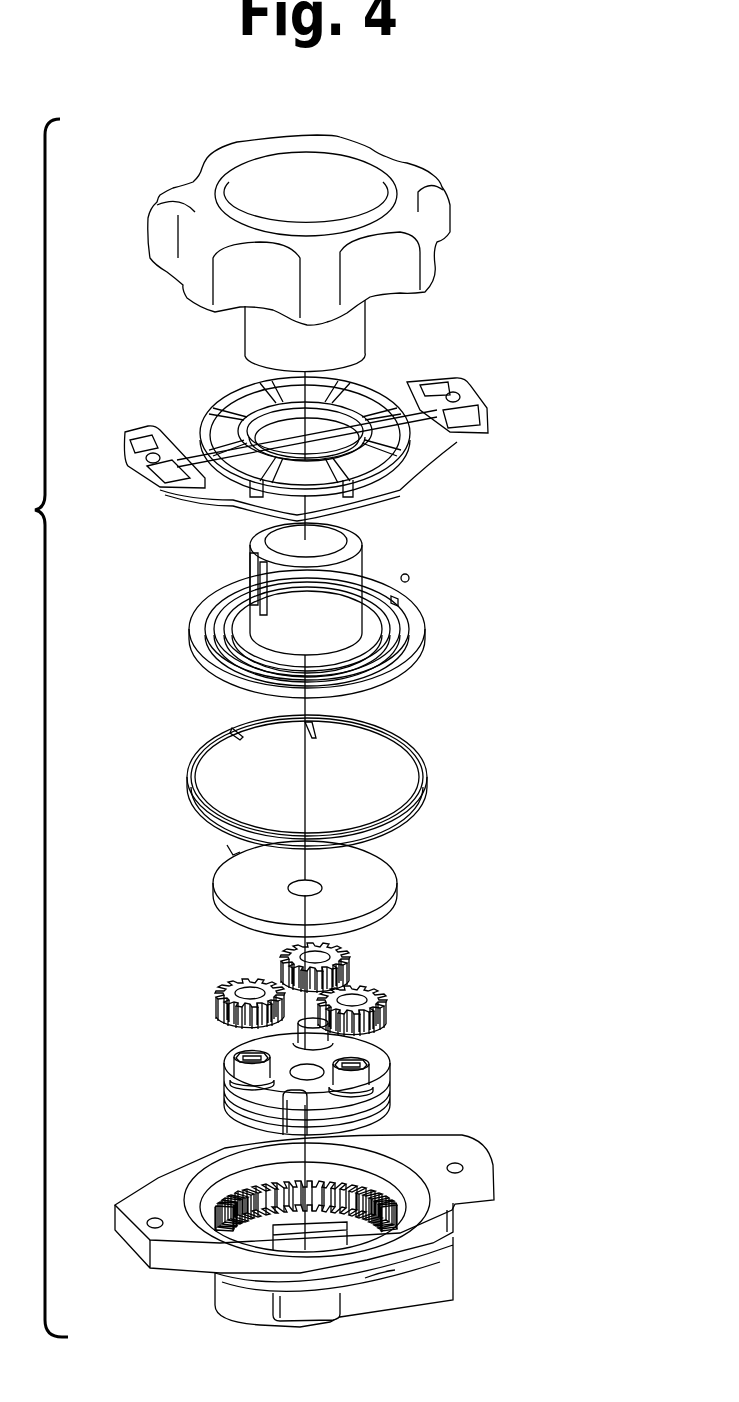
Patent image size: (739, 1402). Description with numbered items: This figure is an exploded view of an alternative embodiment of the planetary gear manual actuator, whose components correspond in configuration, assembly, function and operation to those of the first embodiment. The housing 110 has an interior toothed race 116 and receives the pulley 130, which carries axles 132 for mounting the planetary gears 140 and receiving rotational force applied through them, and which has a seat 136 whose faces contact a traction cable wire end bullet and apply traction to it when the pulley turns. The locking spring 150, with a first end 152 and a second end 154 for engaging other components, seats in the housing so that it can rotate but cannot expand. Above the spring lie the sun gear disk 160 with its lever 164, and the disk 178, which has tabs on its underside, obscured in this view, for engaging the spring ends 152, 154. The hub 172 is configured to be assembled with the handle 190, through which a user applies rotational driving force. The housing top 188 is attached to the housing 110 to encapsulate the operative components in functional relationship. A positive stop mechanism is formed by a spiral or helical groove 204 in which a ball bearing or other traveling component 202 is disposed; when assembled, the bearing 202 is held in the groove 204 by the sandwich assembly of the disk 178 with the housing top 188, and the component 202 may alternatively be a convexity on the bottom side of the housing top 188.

The housing 110 is at (369, 1216).
The toothed race 116 is at (380, 1200).
The pulley 130 is at (338, 1076).
The axles 132 is at (238, 1048).
The seat for traction cable wire end bullet 136 is at (285, 1108).
The planetary gears 140 is at (225, 993).
The locking spring 150 is at (282, 770).
The first spring end 152 is at (365, 730).
The second spring end 154 is at (243, 737).
The sun gear disk 160 is at (258, 891).
The lever 164 is at (235, 848).
The hub 172 is at (253, 530).
The disk 178 is at (318, 634).
The housing top 188 is at (190, 412).
The handle 190 is at (385, 157).
The ball bearing or traveling component 202 is at (409, 574).
The spiral or helical groove 204 is at (407, 630).